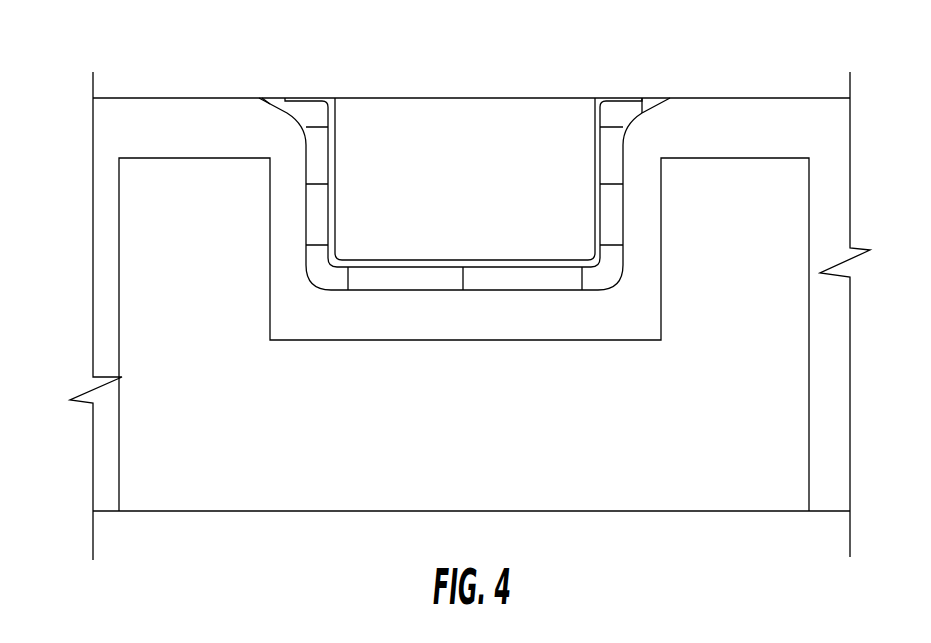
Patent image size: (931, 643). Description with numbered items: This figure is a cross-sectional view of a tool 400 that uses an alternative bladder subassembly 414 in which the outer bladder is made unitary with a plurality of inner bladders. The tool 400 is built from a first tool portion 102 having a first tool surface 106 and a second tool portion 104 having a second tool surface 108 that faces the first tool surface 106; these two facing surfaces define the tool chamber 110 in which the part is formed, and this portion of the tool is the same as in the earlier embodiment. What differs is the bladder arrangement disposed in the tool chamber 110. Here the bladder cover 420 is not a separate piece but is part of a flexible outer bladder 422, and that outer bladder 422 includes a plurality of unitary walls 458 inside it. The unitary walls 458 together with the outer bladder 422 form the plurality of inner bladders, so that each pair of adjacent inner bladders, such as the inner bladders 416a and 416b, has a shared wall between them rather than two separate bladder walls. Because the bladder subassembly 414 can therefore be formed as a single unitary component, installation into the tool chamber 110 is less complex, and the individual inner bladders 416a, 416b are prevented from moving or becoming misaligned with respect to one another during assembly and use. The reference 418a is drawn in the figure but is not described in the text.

The tool 400 is at (123, 45).
The first tool portion 102 is at (485, 202).
The second tool portion 104 is at (684, 417).
The first tool surface 106 is at (623, 136).
The second tool surface 108 is at (663, 230).
The tool chamber 110 is at (482, 328).
The bladder subassembly 414 is at (307, 176).
The inner bladder 416a is at (318, 266).
The inner bladder 416b is at (402, 277).
The intermediate layer portion 418a is at (347, 281).
The bladder cover 420 is at (277, 110).
The outer bladder 422 is at (267, 101).
The unitary walls 458 is at (307, 185).